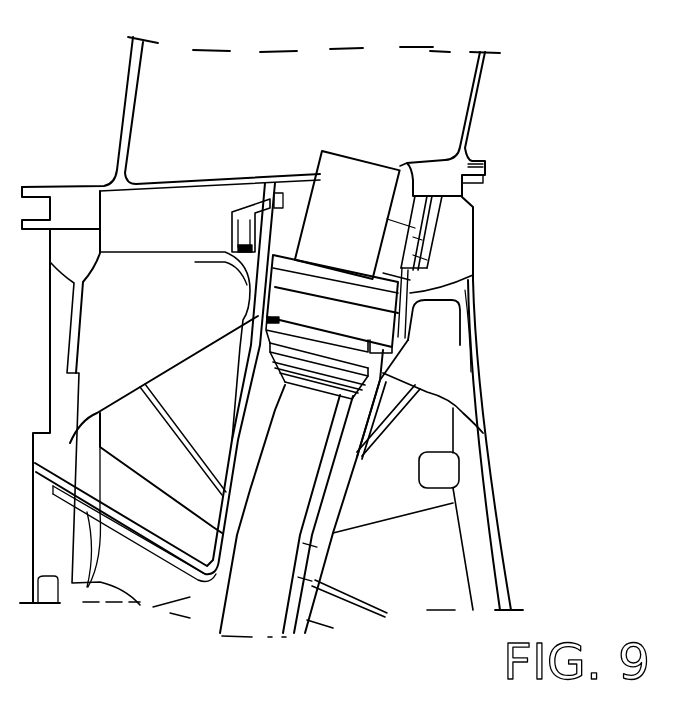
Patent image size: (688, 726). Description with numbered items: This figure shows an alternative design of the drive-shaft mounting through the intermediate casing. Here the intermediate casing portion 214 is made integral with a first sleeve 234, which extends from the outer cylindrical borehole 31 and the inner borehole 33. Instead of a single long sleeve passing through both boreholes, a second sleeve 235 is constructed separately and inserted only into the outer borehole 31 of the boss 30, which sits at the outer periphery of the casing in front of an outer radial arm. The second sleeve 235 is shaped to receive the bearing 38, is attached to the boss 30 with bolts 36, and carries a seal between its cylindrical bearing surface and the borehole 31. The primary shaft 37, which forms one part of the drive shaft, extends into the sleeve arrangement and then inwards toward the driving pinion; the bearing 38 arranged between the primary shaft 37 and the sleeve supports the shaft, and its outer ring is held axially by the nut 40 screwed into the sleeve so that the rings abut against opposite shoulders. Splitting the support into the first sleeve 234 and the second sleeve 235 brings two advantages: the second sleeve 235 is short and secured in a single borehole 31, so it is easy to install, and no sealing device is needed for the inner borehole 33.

The intermediate casing portion 214 is at (497, 500).
The nut 40 is at (297, 272).
The cylindrical borehole 31 is at (455, 287).
The bolts 36 is at (250, 198).
The boss 30 is at (225, 256).
The bearing 38 is at (280, 296).
The second sleeve 235 is at (398, 337).
The first sleeve 234 is at (375, 412).
The primary shaft 37 is at (307, 580).
The borehole 33 is at (222, 552).